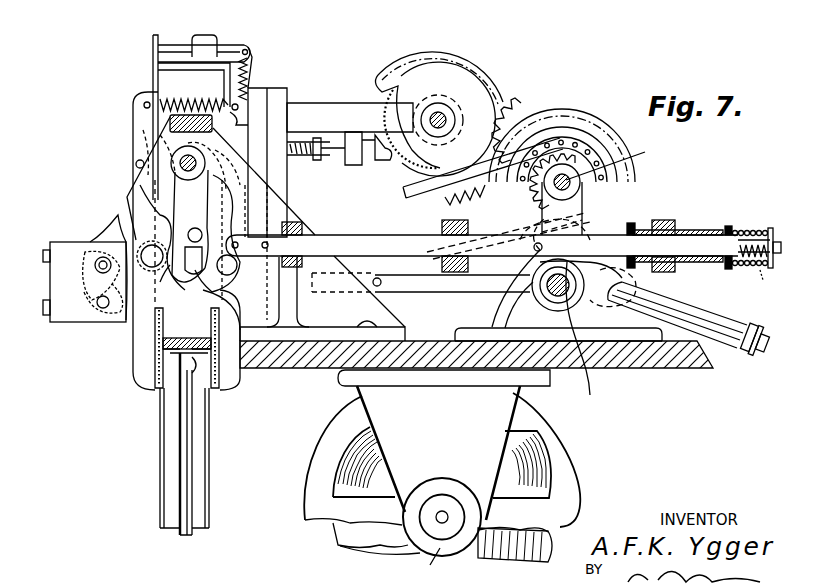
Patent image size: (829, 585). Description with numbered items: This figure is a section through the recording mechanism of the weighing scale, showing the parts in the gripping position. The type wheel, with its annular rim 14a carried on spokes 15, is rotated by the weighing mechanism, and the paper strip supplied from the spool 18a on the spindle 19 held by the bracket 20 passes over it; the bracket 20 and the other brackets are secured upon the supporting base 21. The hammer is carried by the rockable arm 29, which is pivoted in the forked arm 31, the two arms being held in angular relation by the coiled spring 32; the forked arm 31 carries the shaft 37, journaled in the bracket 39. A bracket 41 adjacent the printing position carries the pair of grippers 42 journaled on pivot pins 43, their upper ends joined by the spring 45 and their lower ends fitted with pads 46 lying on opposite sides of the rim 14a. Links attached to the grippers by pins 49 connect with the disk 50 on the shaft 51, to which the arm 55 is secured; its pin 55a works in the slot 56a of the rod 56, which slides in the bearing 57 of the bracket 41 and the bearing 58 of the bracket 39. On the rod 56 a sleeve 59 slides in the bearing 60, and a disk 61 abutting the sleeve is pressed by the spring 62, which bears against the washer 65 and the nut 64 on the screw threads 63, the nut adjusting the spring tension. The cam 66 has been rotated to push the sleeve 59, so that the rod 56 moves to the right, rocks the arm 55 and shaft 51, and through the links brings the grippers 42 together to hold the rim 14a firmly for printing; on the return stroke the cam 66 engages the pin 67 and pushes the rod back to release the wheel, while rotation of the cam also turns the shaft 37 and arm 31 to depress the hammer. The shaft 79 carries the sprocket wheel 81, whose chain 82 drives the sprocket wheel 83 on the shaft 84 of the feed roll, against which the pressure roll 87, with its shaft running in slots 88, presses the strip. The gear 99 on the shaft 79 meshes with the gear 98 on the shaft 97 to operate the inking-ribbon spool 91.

The annular rim 14a is at (131, 340).
The spokes 15 is at (178, 447).
The spool 18a is at (392, 548).
The spindle 19 is at (444, 513).
The bracket 20 is at (442, 466).
The supporting base 21 is at (638, 365).
The rockable arm 29 is at (416, 294).
The forked arm 31 is at (710, 316).
The coiled spring 32 is at (381, 280).
The shaft 37 is at (590, 338).
The bracket 39 is at (558, 300).
The bracket 41 is at (57, 277).
The grippers 42 is at (133, 334).
The pivot pins 43 is at (150, 217).
The spring 45 is at (172, 103).
The pads 46 is at (160, 392).
The pins 49 is at (136, 164).
The disk 50 is at (133, 188).
The shaft 51 is at (182, 171).
The arm 55 is at (189, 214).
The pin 55a is at (183, 277).
The rod 56 is at (353, 238).
The slot 56a is at (210, 300).
The bearing 57 is at (307, 227).
The bearing 58 is at (442, 226).
The sleeve 59 is at (688, 232).
The bearing 60 is at (640, 230).
The disk 61 is at (730, 226).
The spring 62 is at (748, 228).
The screw threads 63 is at (775, 272).
The nut 64 is at (777, 228).
The washer 65 is at (753, 281).
The cam 66 is at (632, 280).
The pin 67 is at (503, 267).
The shaft 79 is at (618, 158).
The sprocket wheel 81 is at (570, 172).
The chain 82 is at (560, 158).
The sprocket wheel 83 is at (87, 307).
The shaft 84 is at (100, 307).
The pressure roll 87 is at (88, 268).
The slots 88 is at (100, 257).
The spool 91 is at (153, 58).
The shaft 97 is at (448, 112).
The gear 98 is at (502, 112).
The gear 99 is at (512, 135).